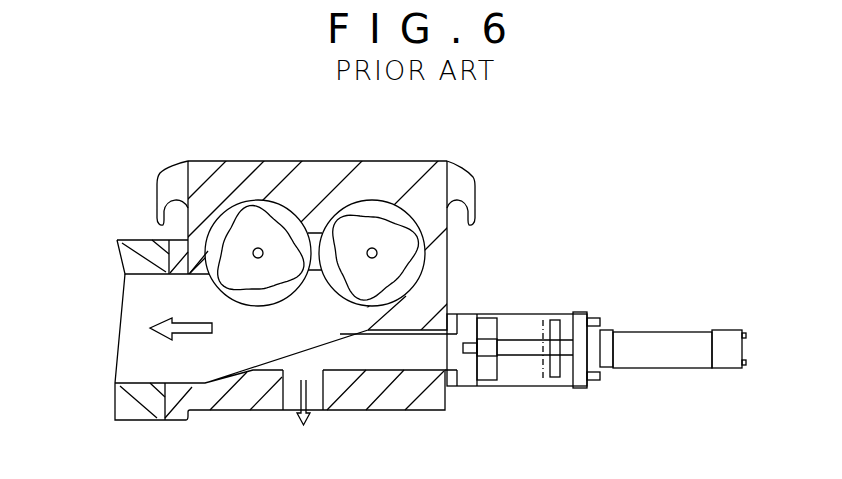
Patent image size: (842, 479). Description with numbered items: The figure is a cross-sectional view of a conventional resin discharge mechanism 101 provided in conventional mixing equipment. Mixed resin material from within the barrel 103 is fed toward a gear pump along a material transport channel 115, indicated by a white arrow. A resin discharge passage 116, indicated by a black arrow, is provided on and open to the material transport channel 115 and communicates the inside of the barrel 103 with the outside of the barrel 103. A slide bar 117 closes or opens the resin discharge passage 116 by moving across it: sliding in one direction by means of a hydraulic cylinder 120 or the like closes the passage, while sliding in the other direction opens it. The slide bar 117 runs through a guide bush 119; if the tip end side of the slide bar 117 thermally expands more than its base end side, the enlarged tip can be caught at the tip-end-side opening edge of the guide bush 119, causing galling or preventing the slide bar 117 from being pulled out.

The resin discharge mechanism 101 is at (512, 181).
The barrel 103 is at (322, 173).
The material transport channel 115 is at (157, 302).
The resin discharge passage 116 is at (291, 392).
The slide bar 117 is at (391, 352).
The guide bush 119 is at (450, 388).
The hydraulic cylinder 120 is at (668, 342).